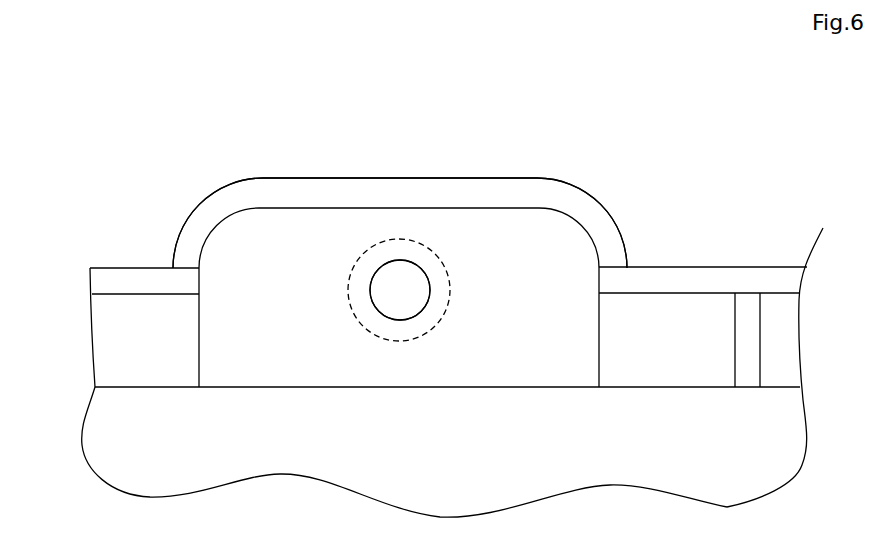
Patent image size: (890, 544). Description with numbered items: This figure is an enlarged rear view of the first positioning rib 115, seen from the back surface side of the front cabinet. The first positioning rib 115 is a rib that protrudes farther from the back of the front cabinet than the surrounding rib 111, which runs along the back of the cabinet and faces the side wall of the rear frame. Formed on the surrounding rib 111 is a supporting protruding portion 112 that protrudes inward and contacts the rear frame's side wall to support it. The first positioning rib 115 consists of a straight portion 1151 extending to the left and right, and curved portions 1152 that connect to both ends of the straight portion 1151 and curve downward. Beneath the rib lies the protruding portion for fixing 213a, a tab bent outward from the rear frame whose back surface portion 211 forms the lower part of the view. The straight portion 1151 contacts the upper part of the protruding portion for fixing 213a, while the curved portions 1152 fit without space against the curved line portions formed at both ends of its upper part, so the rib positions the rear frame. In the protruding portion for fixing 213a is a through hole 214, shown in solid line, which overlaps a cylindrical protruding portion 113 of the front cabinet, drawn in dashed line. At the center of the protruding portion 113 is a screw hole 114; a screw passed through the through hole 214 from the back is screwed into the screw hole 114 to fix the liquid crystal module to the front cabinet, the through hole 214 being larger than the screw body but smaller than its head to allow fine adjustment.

The surrounding rib 111 is at (122, 278).
The supporting protruding portion 112 is at (746, 322).
The protruding portion 113 is at (370, 322).
The screw hole 114 is at (401, 321).
The first positioning rib 115 is at (277, 192).
The straight portion 1151 is at (347, 185).
The curved portion 1152 is at (205, 215).
The back surface portion 211 is at (663, 425).
The protruding portion for fixing 213a is at (512, 260).
The through hole 214 is at (404, 277).